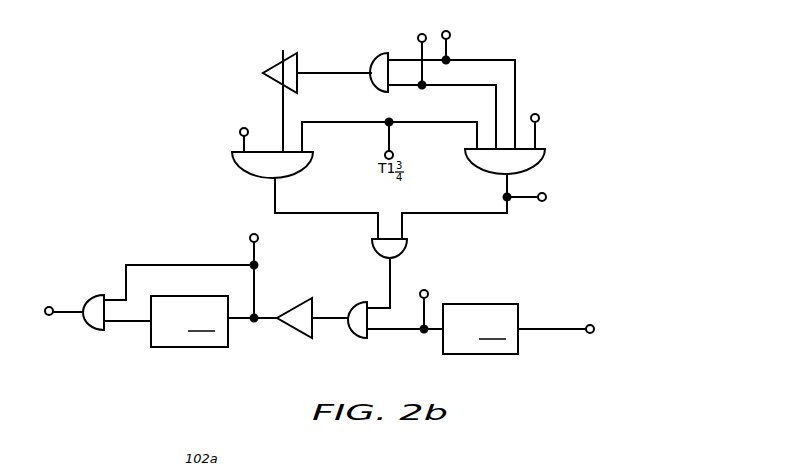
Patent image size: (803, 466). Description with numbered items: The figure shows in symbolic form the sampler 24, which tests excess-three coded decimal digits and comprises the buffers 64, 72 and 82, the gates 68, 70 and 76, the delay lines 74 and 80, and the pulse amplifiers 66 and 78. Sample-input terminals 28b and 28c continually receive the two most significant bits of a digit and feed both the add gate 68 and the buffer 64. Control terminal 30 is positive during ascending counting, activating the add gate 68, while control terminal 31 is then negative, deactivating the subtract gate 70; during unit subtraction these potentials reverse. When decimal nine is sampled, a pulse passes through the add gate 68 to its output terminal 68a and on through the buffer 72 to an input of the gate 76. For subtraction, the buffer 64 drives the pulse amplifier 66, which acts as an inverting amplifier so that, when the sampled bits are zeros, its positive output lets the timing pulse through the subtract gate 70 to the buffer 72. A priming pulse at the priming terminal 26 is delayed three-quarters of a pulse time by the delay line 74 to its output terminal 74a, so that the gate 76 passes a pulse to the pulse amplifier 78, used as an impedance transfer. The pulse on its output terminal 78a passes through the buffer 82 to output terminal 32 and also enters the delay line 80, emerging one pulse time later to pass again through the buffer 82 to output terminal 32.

The pulse amplifier 66 is at (294, 52).
The buffer 64 is at (367, 64).
The sample-input terminal 28b is at (418, 32).
The sample-input terminal 28c is at (450, 32).
The control terminal 31 is at (242, 129).
The control terminal 30 is at (538, 115).
The subtract gate 70 is at (250, 168).
The add gate 68 is at (521, 167).
The output terminal 68a is at (546, 198).
The buffer 72 is at (398, 252).
The gate 76 is at (356, 302).
The output terminal 74a is at (427, 292).
The delay line 74 is at (480, 329).
The priming terminal 26 is at (594, 330).
The pulse amplifier 78 is at (296, 303).
The output terminal 78a is at (247, 241).
The buffer 82 is at (93, 290).
The output terminal 32 is at (45, 312).
The delay line 80 is at (189, 321).
The sampler 24 is at (452, 391).